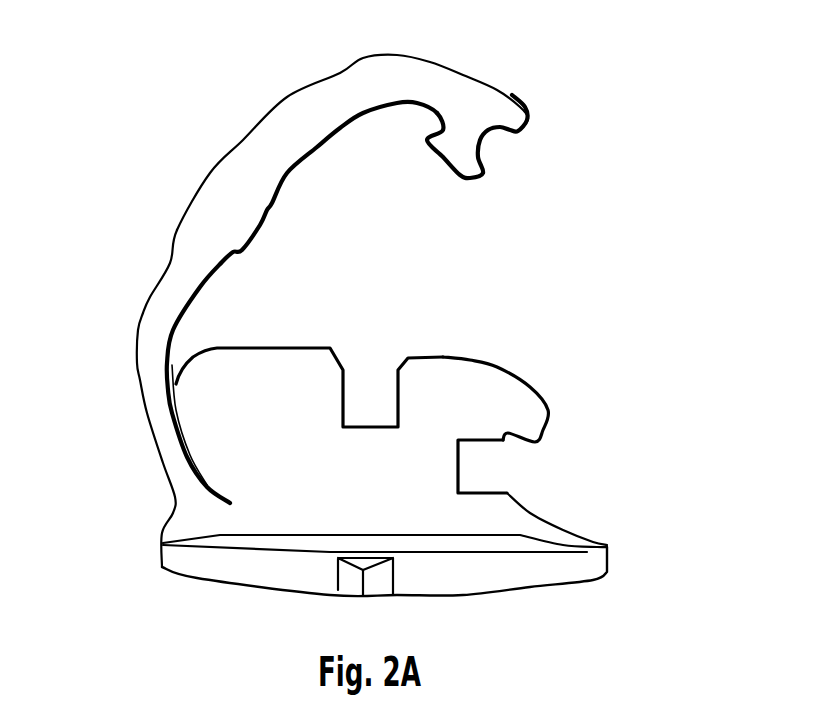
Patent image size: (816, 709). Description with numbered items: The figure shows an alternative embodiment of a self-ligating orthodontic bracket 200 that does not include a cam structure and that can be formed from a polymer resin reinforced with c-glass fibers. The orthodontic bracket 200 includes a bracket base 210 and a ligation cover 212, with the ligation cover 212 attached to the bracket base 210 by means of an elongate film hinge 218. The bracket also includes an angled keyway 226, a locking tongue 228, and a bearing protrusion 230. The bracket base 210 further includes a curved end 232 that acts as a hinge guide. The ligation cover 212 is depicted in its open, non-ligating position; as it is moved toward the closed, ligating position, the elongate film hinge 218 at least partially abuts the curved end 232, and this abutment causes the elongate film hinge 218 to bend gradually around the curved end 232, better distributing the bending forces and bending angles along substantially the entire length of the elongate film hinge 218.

The orthodontic bracket 200 is at (652, 188).
The bracket base 210 is at (577, 573).
The ligation cover 212 is at (220, 185).
The elongate film hinge 218 is at (150, 415).
The angled keyway 226 is at (507, 437).
The locking tongue 228 is at (432, 140).
The bearing protrusion 230 is at (252, 232).
The curved end 232 is at (213, 387).